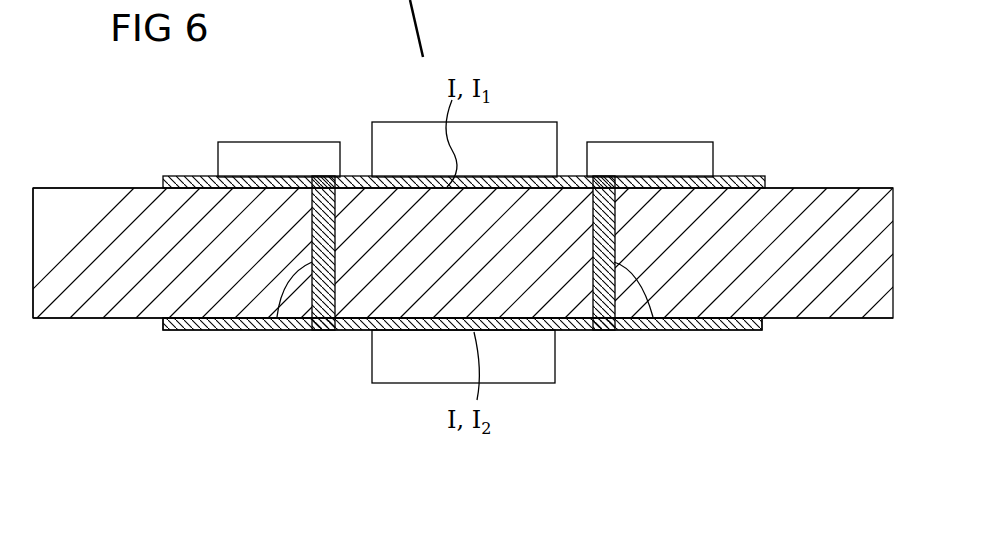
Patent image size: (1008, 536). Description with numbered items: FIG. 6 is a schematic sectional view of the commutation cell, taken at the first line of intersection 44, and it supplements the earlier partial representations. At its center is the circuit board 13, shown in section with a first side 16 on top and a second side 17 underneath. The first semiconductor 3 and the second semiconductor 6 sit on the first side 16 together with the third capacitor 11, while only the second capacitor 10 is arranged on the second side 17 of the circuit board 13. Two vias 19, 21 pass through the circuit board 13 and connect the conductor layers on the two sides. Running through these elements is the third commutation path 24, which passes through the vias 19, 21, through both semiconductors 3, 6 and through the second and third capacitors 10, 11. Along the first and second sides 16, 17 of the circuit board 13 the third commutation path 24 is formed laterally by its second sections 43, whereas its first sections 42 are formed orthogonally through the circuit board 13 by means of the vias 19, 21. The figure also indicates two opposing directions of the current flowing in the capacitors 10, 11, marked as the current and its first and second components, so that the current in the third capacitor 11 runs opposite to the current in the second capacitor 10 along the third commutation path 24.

The first semiconductor 3 is at (277, 143).
The second semiconductor 6 is at (650, 153).
The second capacitor 10 is at (518, 375).
The third capacitor 11 is at (522, 132).
The circuit board 13 is at (830, 187).
The first side of the circuit board 16 is at (867, 187).
The second side of the circuit board 17 is at (866, 320).
The via 19 is at (316, 330).
The via 21 is at (605, 332).
The third commutation path 24 is at (353, 175).
The first sections 42 is at (277, 317).
The second sections 43 is at (347, 332).
The first line of intersection 44 is at (56, 178).